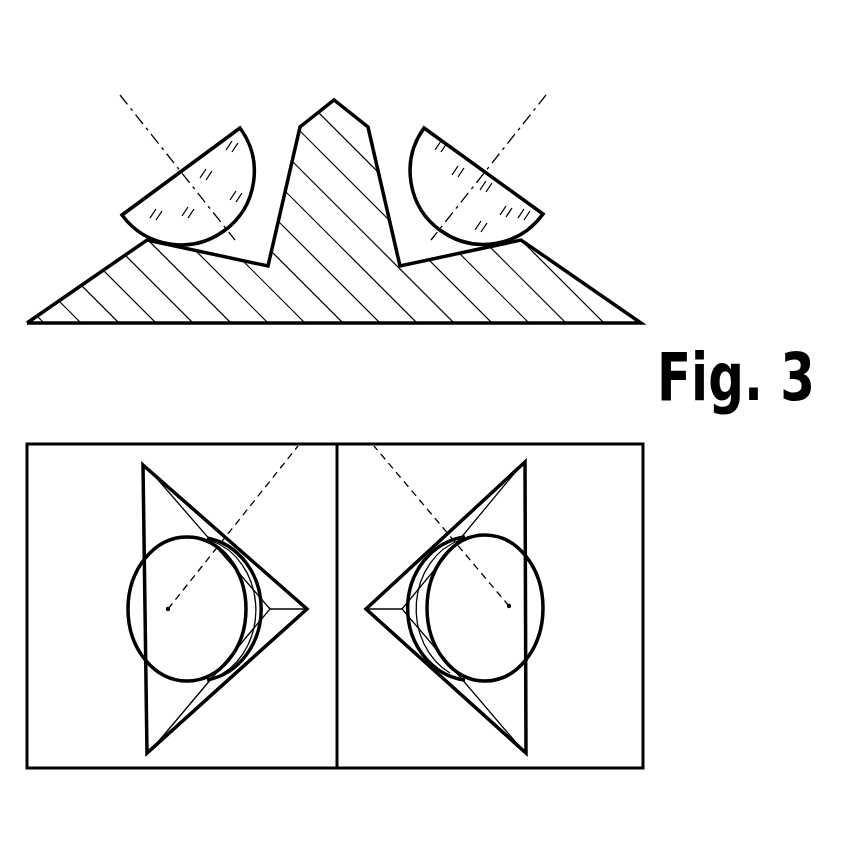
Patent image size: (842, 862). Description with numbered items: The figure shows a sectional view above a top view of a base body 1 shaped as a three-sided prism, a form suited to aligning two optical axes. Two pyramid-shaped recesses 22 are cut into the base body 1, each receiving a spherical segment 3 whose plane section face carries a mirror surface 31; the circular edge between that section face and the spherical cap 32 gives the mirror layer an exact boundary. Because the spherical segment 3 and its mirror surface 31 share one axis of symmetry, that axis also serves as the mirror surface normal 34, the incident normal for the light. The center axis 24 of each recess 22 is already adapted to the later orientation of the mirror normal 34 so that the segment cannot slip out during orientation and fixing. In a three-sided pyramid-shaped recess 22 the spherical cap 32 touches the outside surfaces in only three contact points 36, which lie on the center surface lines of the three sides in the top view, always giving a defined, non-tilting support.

The base body 1 is at (573, 293).
The spherical segment 3 is at (428, 145).
The pyramid-shaped recess 22 is at (388, 168).
The center axis 24 is at (268, 585).
The mirror surface 31 is at (502, 180).
The spherical cap 32 is at (450, 525).
The mirror surface normal 34 is at (162, 147).
The contact point 36 is at (417, 597).